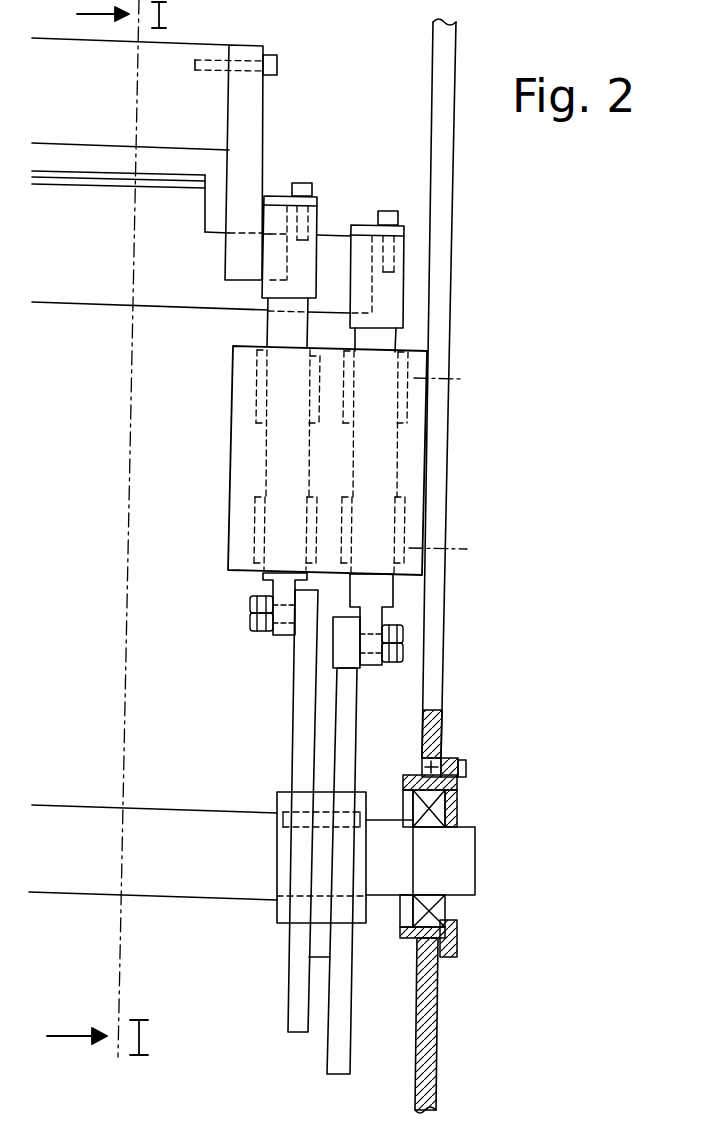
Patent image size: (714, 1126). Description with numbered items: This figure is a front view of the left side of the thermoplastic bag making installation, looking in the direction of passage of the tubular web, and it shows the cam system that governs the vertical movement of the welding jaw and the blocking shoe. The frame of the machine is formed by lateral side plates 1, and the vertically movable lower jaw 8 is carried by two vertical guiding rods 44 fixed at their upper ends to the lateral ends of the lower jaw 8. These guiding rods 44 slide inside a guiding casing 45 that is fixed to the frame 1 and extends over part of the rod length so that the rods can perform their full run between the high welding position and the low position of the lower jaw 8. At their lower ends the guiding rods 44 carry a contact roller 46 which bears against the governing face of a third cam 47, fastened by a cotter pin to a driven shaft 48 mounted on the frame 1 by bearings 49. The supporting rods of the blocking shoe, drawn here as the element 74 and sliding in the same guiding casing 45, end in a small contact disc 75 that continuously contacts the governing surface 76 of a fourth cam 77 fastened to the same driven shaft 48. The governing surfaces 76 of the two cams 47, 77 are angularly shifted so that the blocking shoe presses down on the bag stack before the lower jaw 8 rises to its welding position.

The lateral side plates 1 is at (442, 217).
The lower jaw 8 is at (75, 293).
The vertical guiding rods 44 is at (392, 344).
The guiding casing 45 is at (243, 456).
The contact roller 46 is at (350, 655).
The third cam 47 is at (350, 748).
The driven shaft 48 is at (200, 880).
The bearings 49 is at (437, 912).
The upper jaw holder 74 is at (267, 326).
The contact disc 75 is at (295, 630).
The governing surface 76 is at (346, 672).
The fourth cam 77 is at (302, 738).